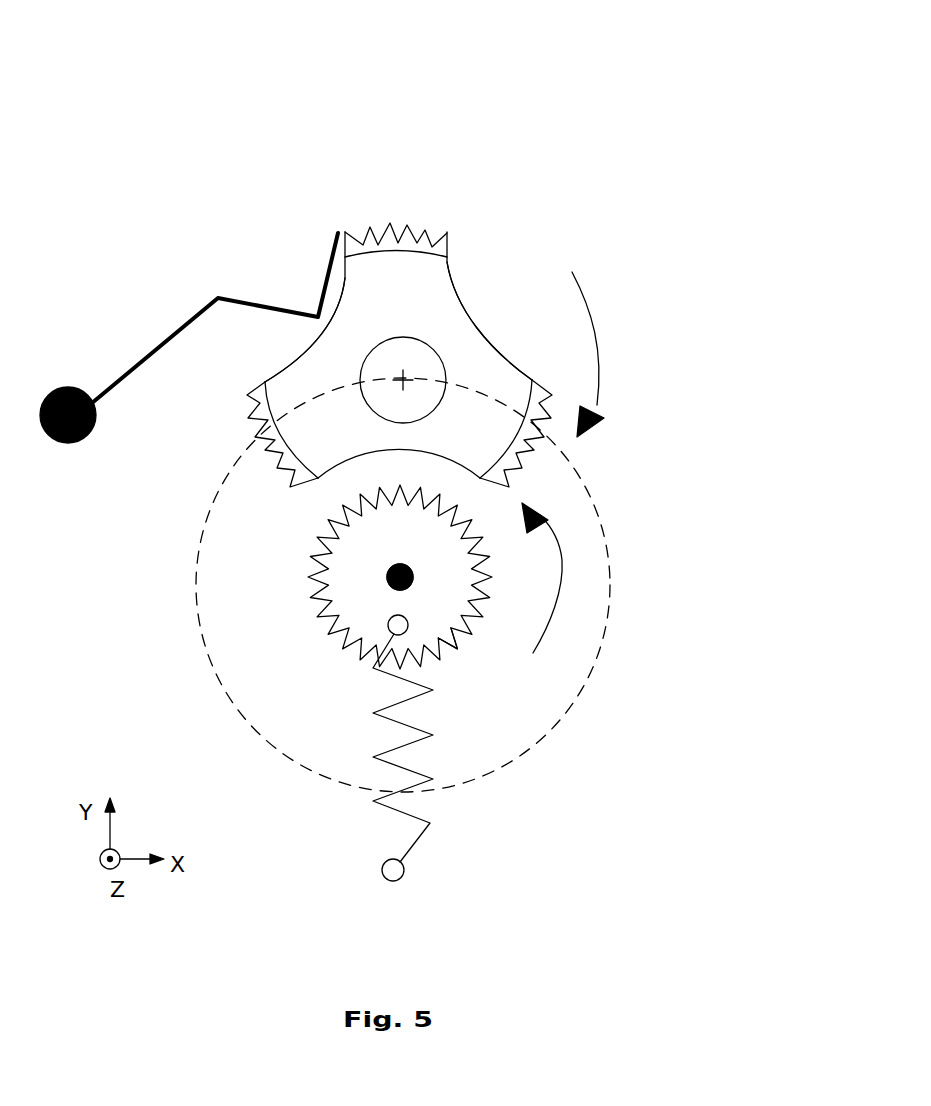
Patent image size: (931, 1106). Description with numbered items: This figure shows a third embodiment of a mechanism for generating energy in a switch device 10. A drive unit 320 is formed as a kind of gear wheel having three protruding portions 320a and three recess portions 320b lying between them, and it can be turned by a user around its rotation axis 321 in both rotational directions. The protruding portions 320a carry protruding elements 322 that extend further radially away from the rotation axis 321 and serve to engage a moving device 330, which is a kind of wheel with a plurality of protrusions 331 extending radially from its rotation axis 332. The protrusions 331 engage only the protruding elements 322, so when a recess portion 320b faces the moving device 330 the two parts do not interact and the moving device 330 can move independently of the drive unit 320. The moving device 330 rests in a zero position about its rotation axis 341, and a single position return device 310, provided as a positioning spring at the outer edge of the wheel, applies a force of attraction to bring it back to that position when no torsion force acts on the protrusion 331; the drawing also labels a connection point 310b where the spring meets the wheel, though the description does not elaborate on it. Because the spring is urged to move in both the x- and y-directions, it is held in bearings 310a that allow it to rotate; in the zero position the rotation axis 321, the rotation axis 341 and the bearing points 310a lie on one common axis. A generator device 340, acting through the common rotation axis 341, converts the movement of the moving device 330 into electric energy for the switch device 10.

The switch device 10 is at (683, 118).
The position return device 310 is at (432, 824).
The bearings 310a is at (388, 878).
The pivot pin of spring 310b is at (388, 624).
The drive unit 320 is at (370, 273).
The protruding portions 320a is at (421, 304).
The recess portions 320b is at (495, 306).
The rotation axis 321 is at (403, 378).
The protruding elements 322 is at (390, 225).
The moving device 330 is at (455, 633).
The protrusions 331 is at (445, 622).
The rotation axis 332 is at (410, 570).
The generator device 340 is at (602, 510).
The rotation axis 341 is at (410, 570).